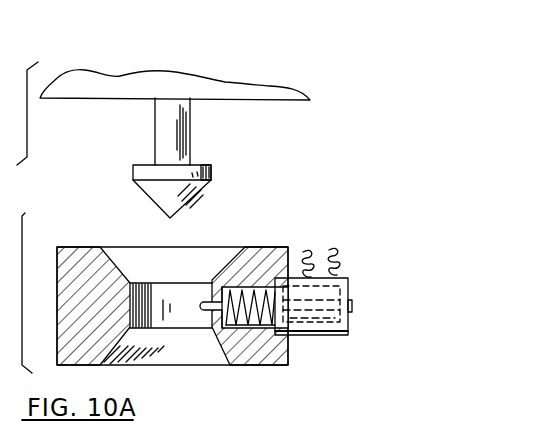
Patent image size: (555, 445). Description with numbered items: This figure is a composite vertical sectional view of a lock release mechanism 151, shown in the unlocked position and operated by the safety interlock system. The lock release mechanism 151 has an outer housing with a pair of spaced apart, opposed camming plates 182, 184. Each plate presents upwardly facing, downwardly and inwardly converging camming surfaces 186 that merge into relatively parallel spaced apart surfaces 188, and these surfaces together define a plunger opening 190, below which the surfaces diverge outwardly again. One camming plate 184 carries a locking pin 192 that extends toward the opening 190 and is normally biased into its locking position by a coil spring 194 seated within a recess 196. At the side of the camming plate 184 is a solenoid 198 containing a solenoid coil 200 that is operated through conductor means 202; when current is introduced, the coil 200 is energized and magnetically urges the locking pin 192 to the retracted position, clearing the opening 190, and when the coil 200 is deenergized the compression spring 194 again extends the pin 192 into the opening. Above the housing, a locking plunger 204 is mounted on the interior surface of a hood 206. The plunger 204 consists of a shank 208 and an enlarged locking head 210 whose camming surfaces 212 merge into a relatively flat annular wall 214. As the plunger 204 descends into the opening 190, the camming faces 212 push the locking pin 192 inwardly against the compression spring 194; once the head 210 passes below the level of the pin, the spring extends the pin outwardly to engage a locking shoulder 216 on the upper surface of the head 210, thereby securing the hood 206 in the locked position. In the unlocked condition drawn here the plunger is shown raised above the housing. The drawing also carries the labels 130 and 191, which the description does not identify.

The stop assembly 130 is at (290, 247).
The lock release mechanism 151 is at (258, 64).
The camming plate 182 is at (72, 360).
The camming plate 184 is at (275, 360).
The camming surfaces 186 is at (120, 265).
The parallel surfaces 188 is at (144, 292).
The plunger opening 190 is at (167, 320).
The chamfer 191 is at (139, 367).
The locking pin 192 is at (204, 306).
The coil spring 194 is at (230, 284).
The recess 196 is at (226, 365).
The solenoid 198 is at (349, 326).
The solenoid coil 200 is at (321, 332).
The conductor means 202 is at (343, 280).
The locking plunger 204 is at (153, 158).
The hood 206 is at (108, 88).
The shank 208 is at (178, 132).
The locking head 210 is at (143, 173).
The camming surfaces 212 is at (193, 190).
The annular wall 214 is at (211, 176).
The locking shoulder 216 is at (206, 167).